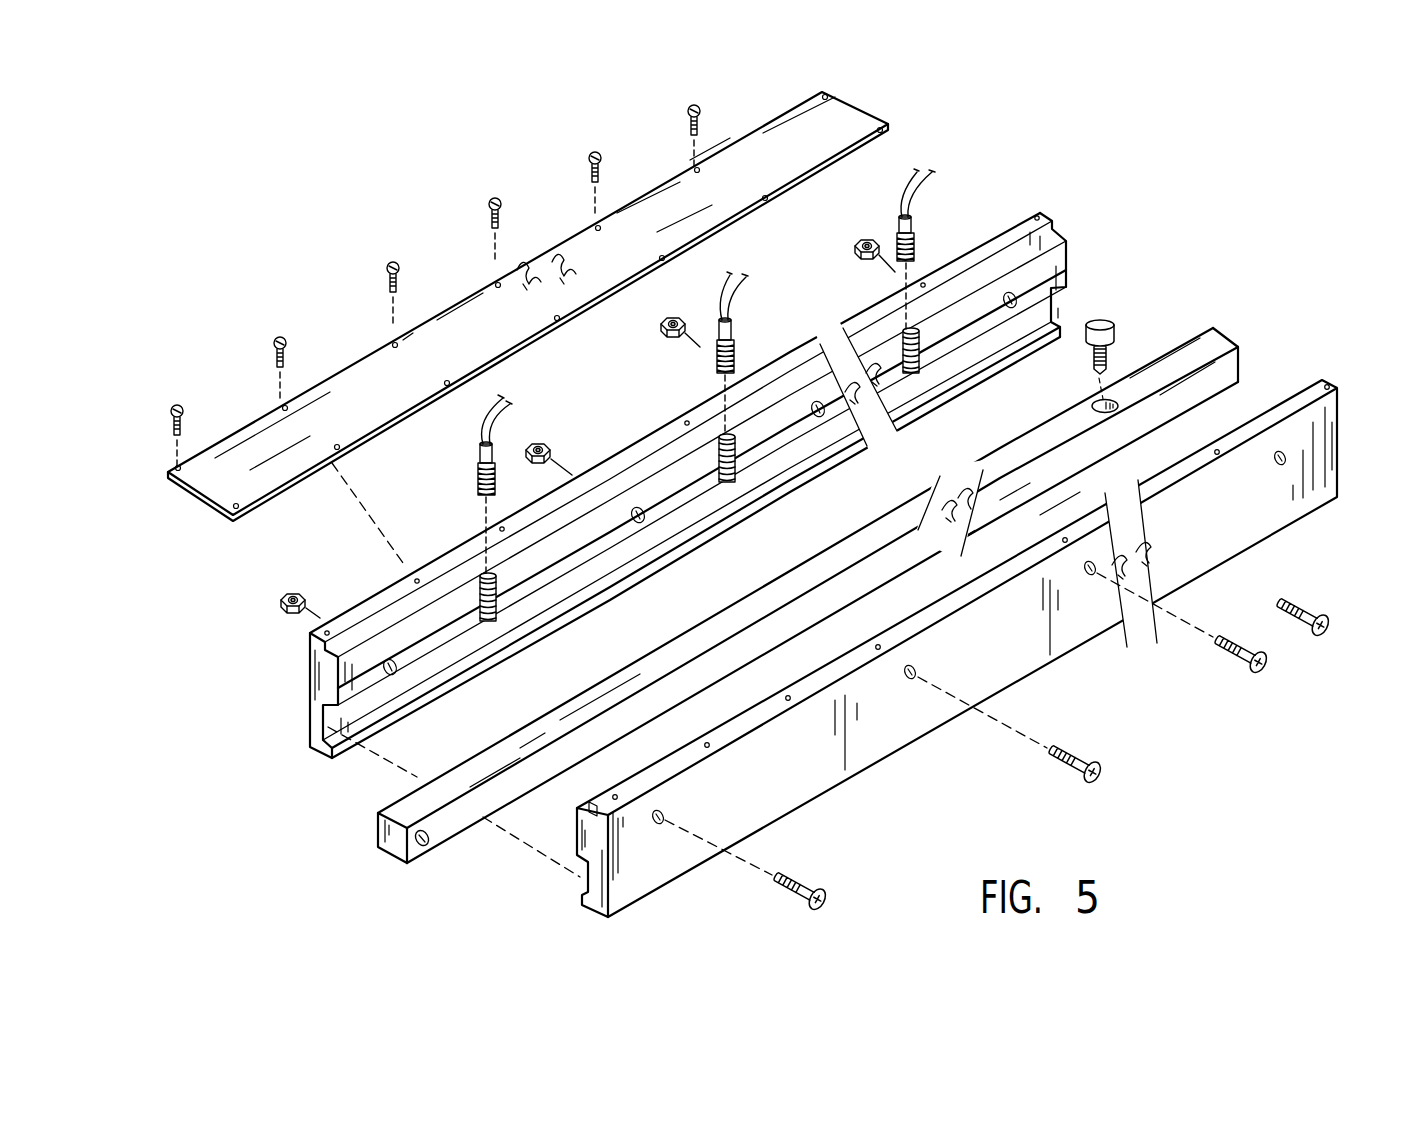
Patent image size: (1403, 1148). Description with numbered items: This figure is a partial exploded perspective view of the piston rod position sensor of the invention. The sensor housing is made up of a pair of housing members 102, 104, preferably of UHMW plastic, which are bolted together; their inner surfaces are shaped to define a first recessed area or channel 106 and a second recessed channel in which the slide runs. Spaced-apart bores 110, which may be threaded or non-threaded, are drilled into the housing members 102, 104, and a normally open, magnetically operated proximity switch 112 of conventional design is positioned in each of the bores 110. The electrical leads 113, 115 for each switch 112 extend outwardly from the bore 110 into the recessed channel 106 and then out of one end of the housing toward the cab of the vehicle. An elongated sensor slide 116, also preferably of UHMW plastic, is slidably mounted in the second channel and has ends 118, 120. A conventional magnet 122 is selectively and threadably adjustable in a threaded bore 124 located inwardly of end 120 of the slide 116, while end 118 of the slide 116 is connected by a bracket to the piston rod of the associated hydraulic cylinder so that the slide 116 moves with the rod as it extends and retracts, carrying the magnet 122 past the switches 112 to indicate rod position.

The housing member 102 is at (318, 680).
The housing member 104 is at (640, 850).
The first recessed area or channel 106 is at (1083, 757).
The bores 110 is at (728, 482).
The proximity switch 112 is at (718, 342).
The electrical lead 113 is at (727, 284).
The electrical lead 115 is at (740, 290).
The sensor slide 116 is at (537, 737).
The end of slide 118 is at (378, 836).
The end of slide 120 is at (1213, 332).
The magnet 122 is at (1110, 320).
The threaded bore 124 is at (1112, 402).